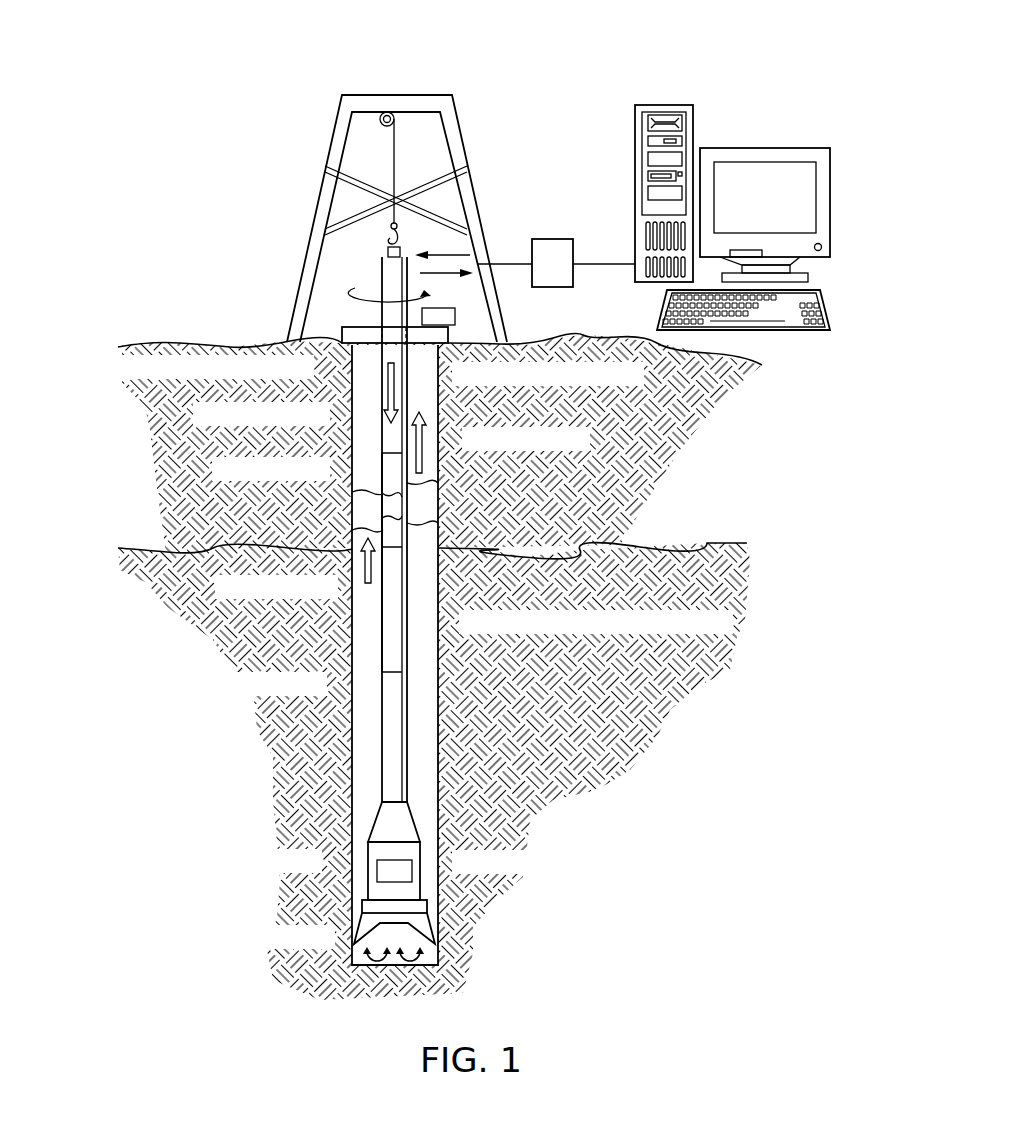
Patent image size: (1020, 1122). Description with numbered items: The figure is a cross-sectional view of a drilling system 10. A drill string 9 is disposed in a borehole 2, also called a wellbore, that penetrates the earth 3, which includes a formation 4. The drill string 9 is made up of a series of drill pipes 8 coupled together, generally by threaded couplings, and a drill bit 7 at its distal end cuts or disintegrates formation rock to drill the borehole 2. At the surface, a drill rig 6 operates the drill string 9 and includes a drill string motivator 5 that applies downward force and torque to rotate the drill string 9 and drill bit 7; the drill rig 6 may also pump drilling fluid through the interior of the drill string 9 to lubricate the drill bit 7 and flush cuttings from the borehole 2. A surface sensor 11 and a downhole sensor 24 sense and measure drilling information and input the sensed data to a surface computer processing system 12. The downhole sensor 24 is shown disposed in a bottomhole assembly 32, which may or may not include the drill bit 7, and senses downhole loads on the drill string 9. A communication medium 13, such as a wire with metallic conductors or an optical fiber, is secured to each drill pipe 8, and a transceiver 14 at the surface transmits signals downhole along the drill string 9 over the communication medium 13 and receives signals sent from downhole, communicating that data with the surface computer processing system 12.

The drilling system 10 is at (342, 113).
The drill rig 6 is at (268, 277).
The drill string motivator 5 is at (345, 343).
The drill string 9 is at (462, 436).
The borehole 2 is at (362, 462).
The drill pipe 8 is at (383, 597).
The communication medium 13 is at (402, 628).
The bottomhole assembly 32 is at (368, 866).
The downhole sensor 24 is at (402, 870).
The drill bit 7 is at (365, 925).
The surface sensor 11 is at (445, 325).
The transceiver 14 is at (552, 287).
The surface computer processing system 12 is at (665, 105).
The earth 3 is at (713, 422).
The formation 4 is at (735, 592).